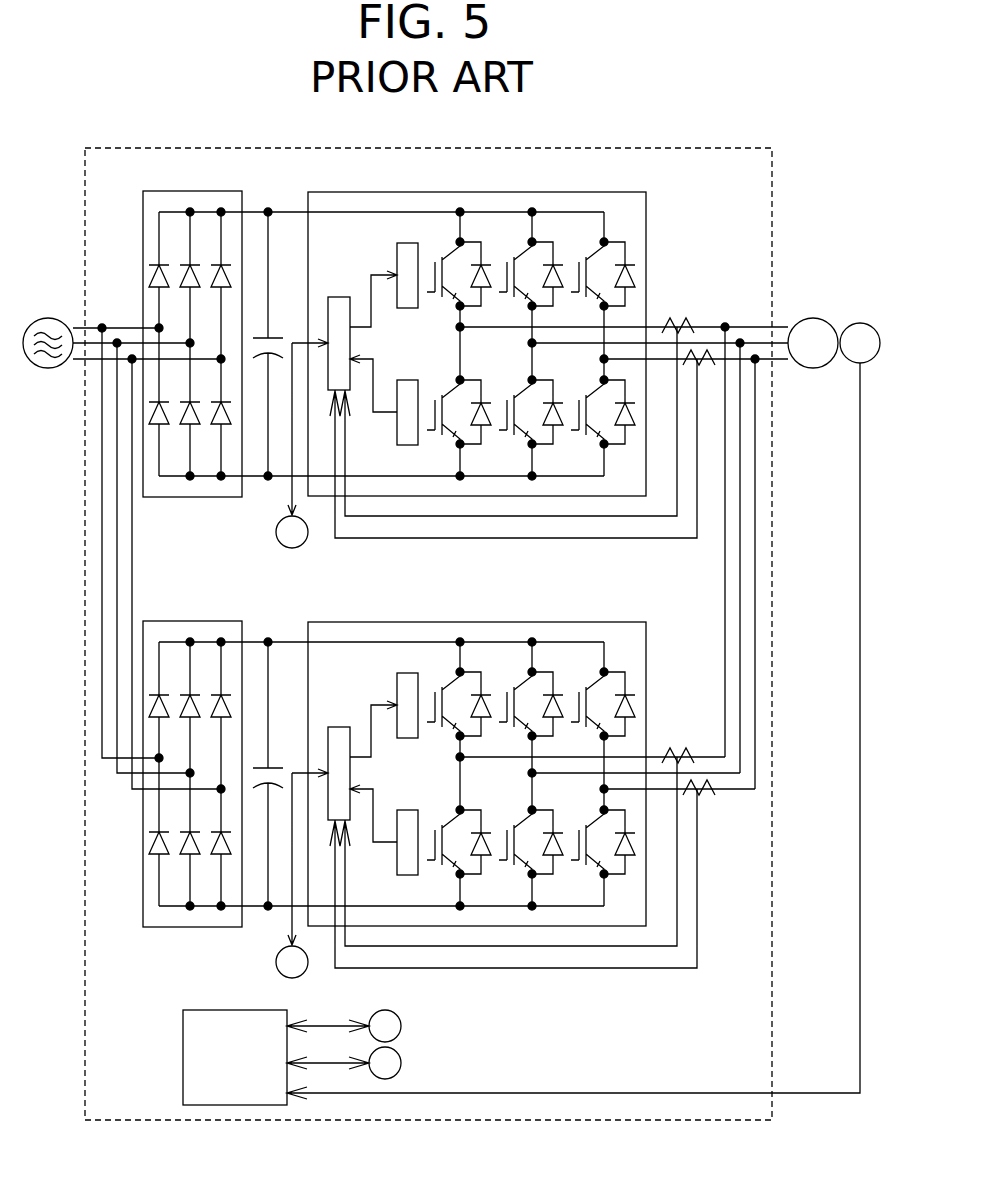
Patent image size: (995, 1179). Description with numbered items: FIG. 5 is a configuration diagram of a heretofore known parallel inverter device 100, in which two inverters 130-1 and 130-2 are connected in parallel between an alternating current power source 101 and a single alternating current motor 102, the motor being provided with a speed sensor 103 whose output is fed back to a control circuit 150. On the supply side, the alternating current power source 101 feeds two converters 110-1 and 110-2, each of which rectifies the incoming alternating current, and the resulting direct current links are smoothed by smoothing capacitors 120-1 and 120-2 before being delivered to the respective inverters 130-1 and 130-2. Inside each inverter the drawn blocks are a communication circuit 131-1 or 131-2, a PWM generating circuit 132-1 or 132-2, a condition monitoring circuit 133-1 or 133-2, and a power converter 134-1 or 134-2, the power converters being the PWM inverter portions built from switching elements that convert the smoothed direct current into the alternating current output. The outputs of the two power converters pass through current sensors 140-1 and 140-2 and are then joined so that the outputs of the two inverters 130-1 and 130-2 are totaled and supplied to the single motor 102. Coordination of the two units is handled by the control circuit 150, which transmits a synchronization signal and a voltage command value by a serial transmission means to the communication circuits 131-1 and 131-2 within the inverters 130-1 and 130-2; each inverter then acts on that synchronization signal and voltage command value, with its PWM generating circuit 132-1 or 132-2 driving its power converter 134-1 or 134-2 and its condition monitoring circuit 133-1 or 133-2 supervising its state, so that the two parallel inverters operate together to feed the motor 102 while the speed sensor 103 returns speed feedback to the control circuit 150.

The parallel inverter device 100 is at (772, 165).
The alternating current power source 101 is at (48, 318).
The alternating current motor 102 is at (806, 318).
The speed sensor 103 is at (860, 323).
The converter 110-1 is at (166, 192).
The converter 110-2 is at (373, 758).
The smoothing capacitor 120-1 is at (283, 336).
The smoothing capacitor 120-2 is at (282, 747).
The inverter 130-1 is at (646, 225).
The inverter 130-2 is at (531, 774).
The communication circuit 131-1 is at (340, 297).
The communication circuit 131-2 is at (486, 783).
The PWM generating circuit 132-1 is at (397, 258).
The PWM generating circuit 132-2 is at (384, 702).
The condition monitoring circuit 133-1 is at (396, 430).
The condition monitoring circuit 133-2 is at (384, 843).
The power converter (PWM inverter portion) 134-1 is at (558, 238).
The power converter (PWM inverter portion) 134-2 is at (531, 730).
The current sensor 140-1 is at (698, 350).
The current sensor 140-2 is at (683, 732).
The control circuit 150 is at (183, 1057).